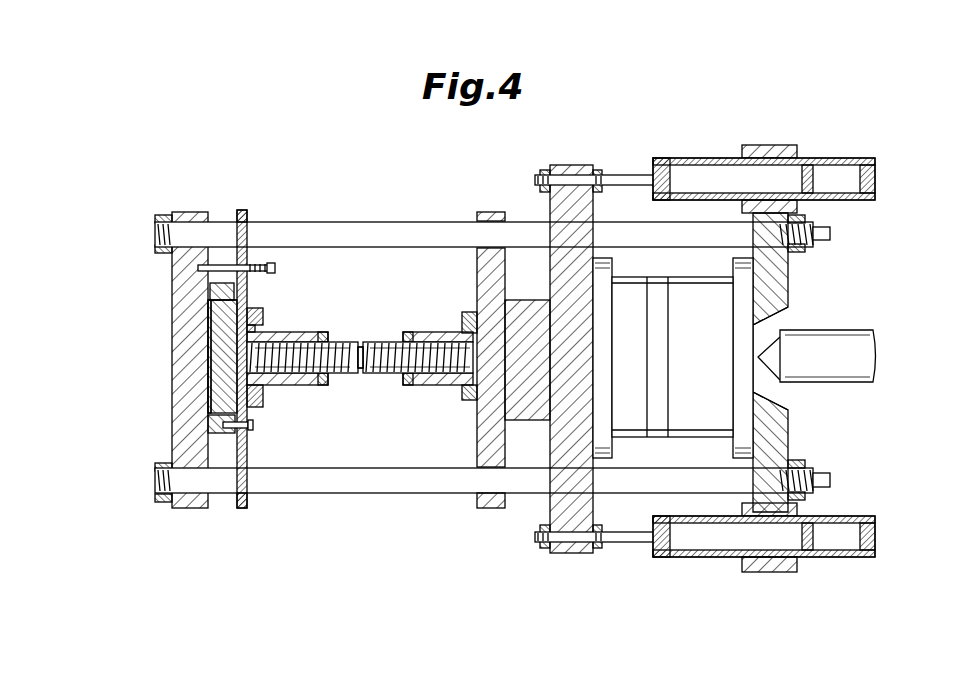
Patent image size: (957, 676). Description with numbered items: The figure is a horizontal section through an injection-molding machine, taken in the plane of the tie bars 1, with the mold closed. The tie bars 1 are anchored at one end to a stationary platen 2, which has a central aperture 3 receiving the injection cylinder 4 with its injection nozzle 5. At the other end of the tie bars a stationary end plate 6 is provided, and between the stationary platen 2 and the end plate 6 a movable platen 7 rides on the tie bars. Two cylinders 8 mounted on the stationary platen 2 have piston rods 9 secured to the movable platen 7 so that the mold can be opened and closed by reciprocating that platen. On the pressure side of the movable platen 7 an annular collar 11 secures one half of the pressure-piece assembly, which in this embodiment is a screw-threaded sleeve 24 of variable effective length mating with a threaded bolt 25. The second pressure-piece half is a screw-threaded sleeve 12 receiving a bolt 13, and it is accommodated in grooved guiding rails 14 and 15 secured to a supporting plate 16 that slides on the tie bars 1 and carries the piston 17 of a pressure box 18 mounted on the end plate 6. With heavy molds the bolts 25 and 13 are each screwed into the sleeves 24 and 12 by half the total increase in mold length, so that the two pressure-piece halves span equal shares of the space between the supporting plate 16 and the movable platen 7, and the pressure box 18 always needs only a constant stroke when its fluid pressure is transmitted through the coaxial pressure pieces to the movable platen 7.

The tie bars 1 is at (265, 233).
The stationary platen 2 is at (790, 270).
The central aperture 3 is at (782, 313).
The injection cylinder 4 is at (857, 348).
The injection nozzle 5 is at (775, 362).
The end plate 6 is at (195, 218).
The movable platen 7 is at (493, 212).
The cylinders 8 is at (795, 153).
The piston rods 9 is at (635, 175).
The annular collar 11 is at (464, 312).
The screw-threaded sleeve 12 is at (300, 336).
The bolt 13 is at (337, 336).
The guiding rail 14 is at (210, 312).
The guiding rail 15 is at (210, 398).
The supporting plate 16 is at (241, 210).
The piston 17 is at (225, 330).
The pressure box 18 is at (210, 430).
The sleeve 24 is at (430, 336).
The screw-threaded bolt 25 is at (380, 336).